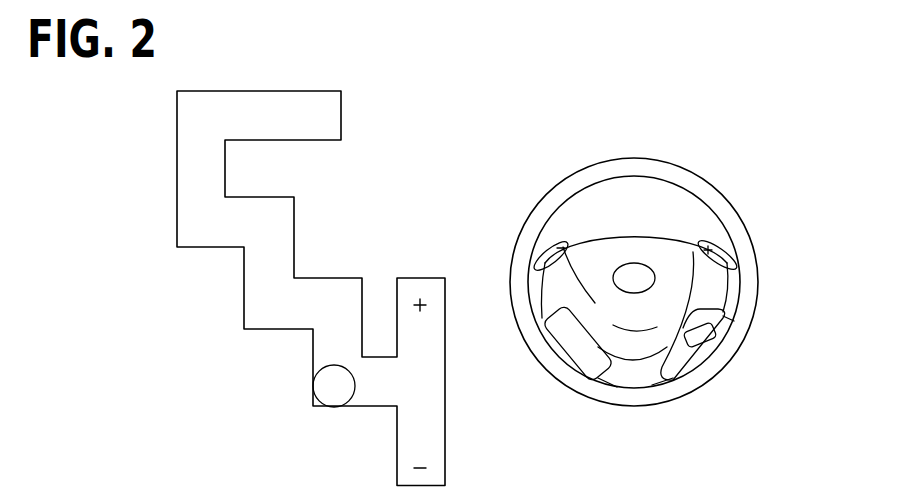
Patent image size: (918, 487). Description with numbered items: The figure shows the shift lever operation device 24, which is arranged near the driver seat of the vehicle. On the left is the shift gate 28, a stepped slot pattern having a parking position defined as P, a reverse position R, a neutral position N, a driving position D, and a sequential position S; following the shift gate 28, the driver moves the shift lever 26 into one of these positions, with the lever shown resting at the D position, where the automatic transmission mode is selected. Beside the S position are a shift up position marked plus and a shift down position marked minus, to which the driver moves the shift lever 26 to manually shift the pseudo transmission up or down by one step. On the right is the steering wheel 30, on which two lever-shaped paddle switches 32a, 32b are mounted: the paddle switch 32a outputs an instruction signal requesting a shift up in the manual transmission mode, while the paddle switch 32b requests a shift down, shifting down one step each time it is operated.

The shift lever operation device 24 is at (648, 273).
The shift lever 26 is at (312, 396).
The shift gate 28 is at (345, 278).
The steering wheel 30 is at (717, 375).
The paddle switch 32a is at (705, 240).
The paddle switch 32b is at (562, 236).